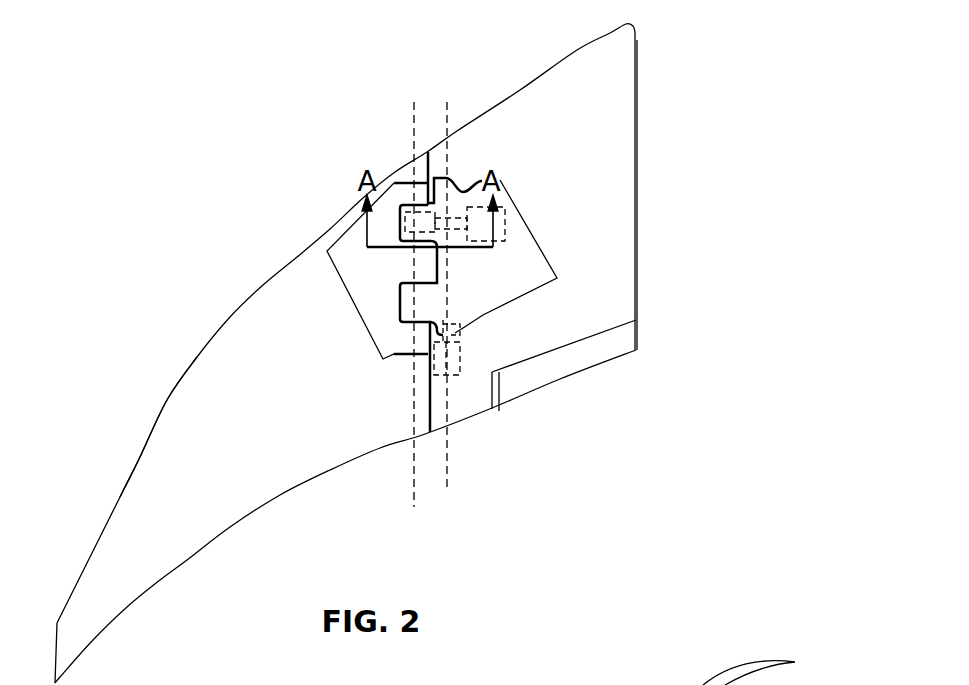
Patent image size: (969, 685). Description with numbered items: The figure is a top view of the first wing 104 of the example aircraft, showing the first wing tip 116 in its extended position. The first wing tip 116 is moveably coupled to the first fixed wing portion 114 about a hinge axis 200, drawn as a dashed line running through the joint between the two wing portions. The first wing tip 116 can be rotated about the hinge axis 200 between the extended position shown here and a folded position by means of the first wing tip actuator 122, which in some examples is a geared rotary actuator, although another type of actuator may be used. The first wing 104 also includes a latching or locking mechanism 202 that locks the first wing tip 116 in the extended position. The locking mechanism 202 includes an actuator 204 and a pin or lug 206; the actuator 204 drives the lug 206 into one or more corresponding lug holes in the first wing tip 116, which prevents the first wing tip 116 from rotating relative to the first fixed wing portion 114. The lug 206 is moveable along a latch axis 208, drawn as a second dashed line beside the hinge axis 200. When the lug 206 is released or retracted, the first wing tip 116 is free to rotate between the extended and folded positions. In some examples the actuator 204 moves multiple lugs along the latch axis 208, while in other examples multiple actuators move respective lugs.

The first wing 104 is at (282, 303).
The first fixed wing portion 114 is at (582, 67).
The first wing tip 116 is at (233, 368).
The first wing tip actuator 122 is at (505, 220).
The hinge axis 200 is at (413, 115).
The locking mechanism 202 is at (458, 378).
The actuator 204 is at (460, 358).
The lug 206 is at (452, 327).
The latch axis 208 is at (447, 105).